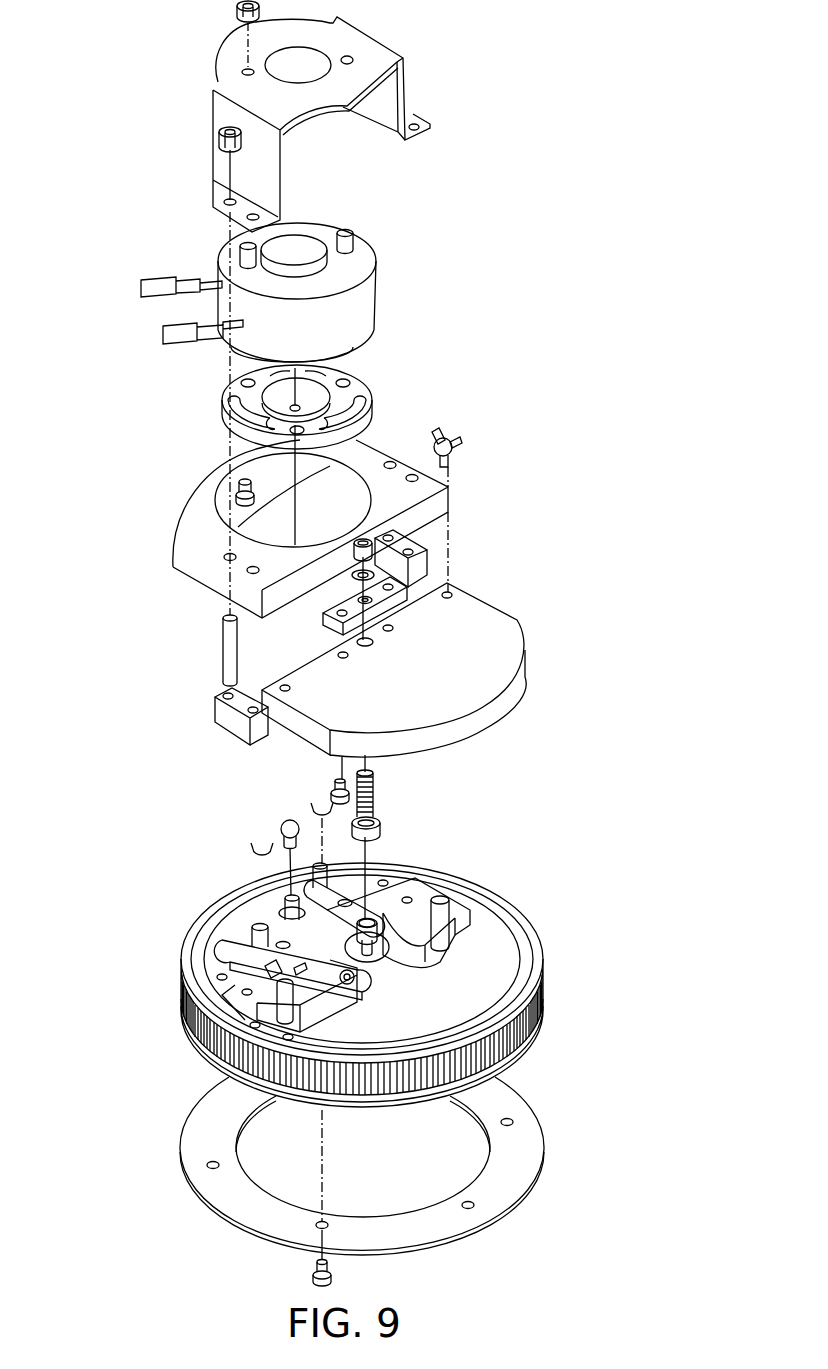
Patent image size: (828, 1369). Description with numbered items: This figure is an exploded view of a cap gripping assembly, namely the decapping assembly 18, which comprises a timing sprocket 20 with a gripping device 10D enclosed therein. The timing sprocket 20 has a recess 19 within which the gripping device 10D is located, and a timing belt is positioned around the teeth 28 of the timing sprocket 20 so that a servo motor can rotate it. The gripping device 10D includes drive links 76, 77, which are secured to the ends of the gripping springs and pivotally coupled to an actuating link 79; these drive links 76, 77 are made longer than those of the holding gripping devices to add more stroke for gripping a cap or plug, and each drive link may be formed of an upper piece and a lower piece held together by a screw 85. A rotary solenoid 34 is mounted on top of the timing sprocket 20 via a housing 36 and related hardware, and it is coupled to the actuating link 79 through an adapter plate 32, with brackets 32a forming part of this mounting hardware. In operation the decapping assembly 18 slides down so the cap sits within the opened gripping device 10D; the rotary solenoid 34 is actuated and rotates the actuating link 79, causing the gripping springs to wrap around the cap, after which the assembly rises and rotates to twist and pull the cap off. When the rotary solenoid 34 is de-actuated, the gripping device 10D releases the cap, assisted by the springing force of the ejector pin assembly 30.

The decapping assembly 18 is at (135, 897).
The timing sprocket 20 is at (417, 985).
The teeth 28 is at (230, 1052).
The ejector pin assembly 30 is at (390, 800).
The adapter plate 32 is at (385, 388).
The mounting brackets 32a is at (413, 968).
The rotary solenoid 34 is at (385, 282).
The housing 36 is at (168, 125).
The drive link 76 is at (344, 970).
The drive link 77 is at (338, 887).
The actuating link 79 is at (280, 925).
The screw 85 is at (288, 911).
The gripping device 10D is at (215, 938).
The recess 19 is at (232, 997).